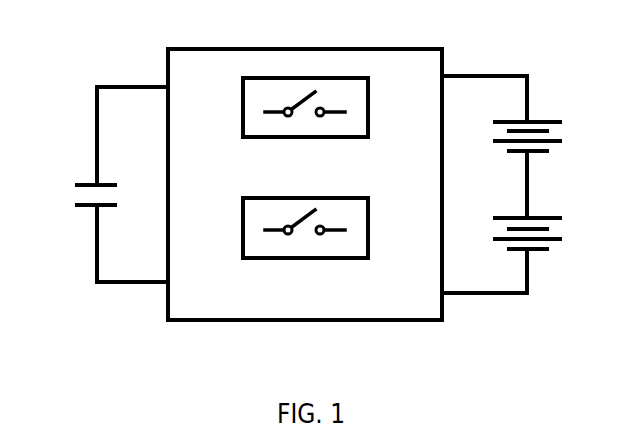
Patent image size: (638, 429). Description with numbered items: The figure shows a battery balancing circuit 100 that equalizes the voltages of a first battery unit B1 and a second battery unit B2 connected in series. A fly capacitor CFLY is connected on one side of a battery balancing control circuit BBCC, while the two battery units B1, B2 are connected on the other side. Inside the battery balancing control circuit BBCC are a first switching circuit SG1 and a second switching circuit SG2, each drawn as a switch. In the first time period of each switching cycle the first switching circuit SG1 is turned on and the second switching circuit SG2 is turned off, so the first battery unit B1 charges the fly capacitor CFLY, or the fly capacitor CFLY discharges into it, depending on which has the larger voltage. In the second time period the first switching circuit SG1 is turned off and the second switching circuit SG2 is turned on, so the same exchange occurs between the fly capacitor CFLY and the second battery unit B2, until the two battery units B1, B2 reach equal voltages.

The battery balancing circuit 100 is at (110, 63).
The battery balancing control circuit BBCC is at (308, 49).
The first switching circuit SG1 is at (302, 137).
The second switching circuit SG2 is at (302, 258).
The fly capacitor CFLY is at (88, 184).
The first battery unit B1 is at (523, 147).
The second battery unit B2 is at (523, 255).